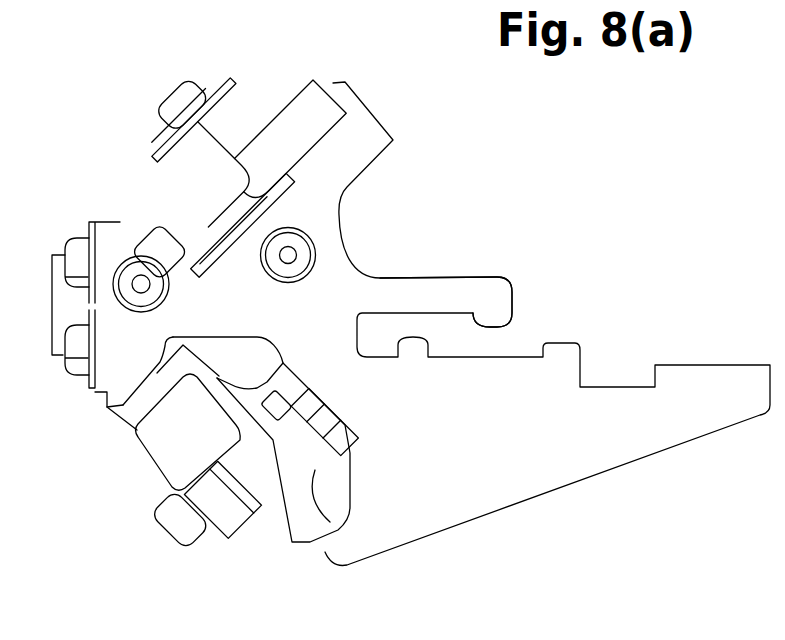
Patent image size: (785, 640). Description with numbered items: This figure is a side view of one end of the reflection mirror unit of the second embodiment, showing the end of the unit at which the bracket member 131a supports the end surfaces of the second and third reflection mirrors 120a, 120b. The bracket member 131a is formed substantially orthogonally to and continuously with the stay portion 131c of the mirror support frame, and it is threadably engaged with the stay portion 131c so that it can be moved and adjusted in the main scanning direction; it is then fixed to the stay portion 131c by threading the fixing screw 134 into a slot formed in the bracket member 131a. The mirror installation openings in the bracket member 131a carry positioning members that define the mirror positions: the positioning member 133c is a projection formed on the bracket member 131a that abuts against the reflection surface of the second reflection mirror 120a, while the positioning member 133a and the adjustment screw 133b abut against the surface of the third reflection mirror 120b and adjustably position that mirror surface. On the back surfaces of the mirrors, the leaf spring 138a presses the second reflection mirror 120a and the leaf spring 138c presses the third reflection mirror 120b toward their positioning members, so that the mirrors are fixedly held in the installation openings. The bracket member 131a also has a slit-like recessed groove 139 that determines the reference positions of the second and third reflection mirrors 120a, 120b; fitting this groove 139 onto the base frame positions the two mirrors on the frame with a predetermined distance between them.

The second reflection mirror 120a is at (297, 122).
The third reflection mirror 120b is at (277, 507).
The bracket member 131a is at (502, 450).
The stay portion 131c is at (95, 394).
The positioning member 133a is at (115, 400).
The adjustment screw 133b is at (320, 467).
The positioning member 133c is at (268, 193).
The fixing screw 134 is at (83, 252).
The leaf spring 138a is at (207, 108).
The leaf spring 138c is at (202, 537).
The slit-like recessed groove 139 is at (457, 337).